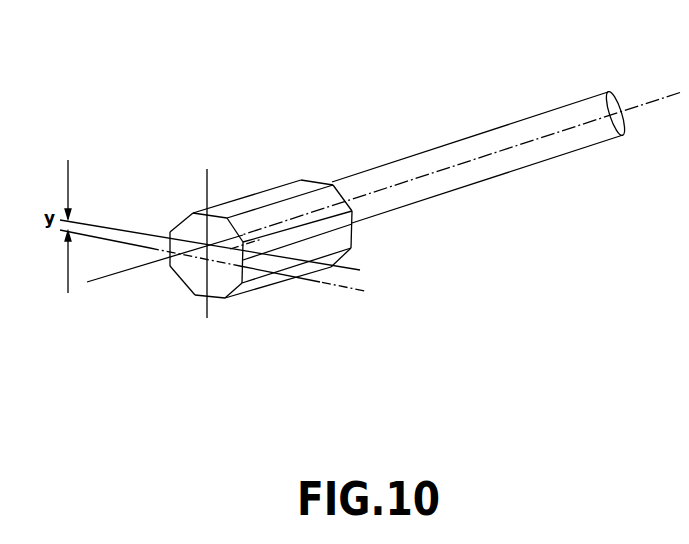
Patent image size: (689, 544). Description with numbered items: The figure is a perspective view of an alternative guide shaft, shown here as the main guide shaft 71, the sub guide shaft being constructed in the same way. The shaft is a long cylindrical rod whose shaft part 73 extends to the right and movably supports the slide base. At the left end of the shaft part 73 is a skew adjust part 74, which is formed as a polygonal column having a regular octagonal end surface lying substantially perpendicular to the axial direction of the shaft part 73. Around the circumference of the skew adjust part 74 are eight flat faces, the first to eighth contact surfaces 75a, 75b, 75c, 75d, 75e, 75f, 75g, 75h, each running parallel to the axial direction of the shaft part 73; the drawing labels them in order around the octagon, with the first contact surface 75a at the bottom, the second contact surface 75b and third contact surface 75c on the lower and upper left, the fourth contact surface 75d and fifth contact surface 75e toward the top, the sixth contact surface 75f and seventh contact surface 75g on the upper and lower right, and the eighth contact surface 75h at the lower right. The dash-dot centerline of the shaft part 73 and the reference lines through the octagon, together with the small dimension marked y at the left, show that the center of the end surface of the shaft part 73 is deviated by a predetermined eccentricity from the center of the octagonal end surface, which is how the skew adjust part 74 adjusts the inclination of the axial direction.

The main guide shaft 71 is at (407, 168).
The shaft part 73 is at (523, 126).
The skew adjust part 74 is at (266, 236).
The first contact surface 75a is at (203, 297).
The second contact surface 75b is at (184, 282).
The third contact surface 75c is at (172, 238).
The fourth contact surface 75d is at (190, 216).
The fifth contact surface 75e is at (247, 207).
The sixth contact surface 75f is at (262, 219).
The seventh contact surface 75g is at (285, 247).
The eighth contact surface 75h is at (258, 281).